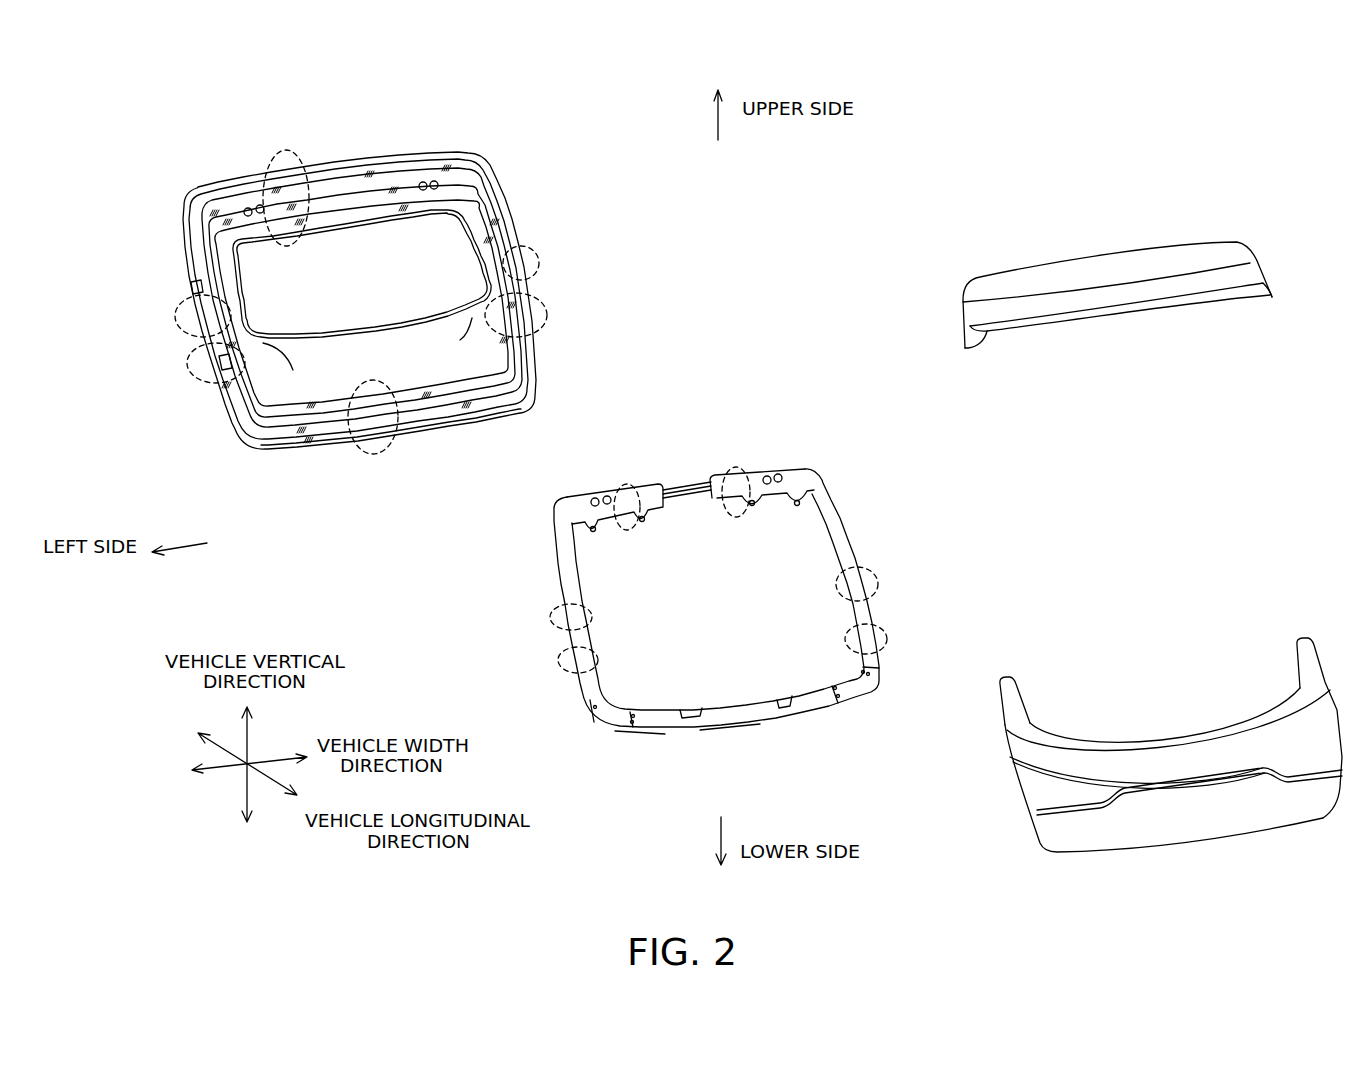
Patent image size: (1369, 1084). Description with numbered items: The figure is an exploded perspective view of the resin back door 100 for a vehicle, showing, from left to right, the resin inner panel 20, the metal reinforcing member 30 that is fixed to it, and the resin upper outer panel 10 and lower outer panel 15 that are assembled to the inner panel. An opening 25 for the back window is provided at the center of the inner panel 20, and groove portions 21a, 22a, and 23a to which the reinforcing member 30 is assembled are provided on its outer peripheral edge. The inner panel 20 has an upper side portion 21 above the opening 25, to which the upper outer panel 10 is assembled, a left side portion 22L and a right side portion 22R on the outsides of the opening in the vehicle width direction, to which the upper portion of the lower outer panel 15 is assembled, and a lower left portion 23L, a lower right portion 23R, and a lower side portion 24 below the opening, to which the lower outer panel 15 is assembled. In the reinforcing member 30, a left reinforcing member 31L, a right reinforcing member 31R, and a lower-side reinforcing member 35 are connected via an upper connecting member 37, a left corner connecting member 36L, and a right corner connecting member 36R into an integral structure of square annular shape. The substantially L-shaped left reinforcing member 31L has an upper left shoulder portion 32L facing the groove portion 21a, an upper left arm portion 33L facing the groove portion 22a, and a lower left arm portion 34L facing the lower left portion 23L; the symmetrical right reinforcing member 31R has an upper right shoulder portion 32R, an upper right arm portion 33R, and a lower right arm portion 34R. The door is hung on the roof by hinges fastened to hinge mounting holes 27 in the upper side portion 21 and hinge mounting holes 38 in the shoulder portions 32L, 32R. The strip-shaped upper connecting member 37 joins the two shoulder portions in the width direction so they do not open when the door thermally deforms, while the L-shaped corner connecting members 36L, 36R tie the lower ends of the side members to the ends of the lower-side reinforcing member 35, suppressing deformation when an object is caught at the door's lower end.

The resin back door 100 is at (946, 118).
The upper outer panel 10 is at (1210, 247).
The lower outer panel 15 is at (1340, 688).
The inner panel 20 is at (517, 135).
The upper side portion 21 is at (284, 150).
The groove portion 21a is at (327, 202).
The left side portion 22L is at (176, 314).
The right side portion 22R is at (537, 257).
The groove portion 22a is at (190, 287).
The lower left portion 23L is at (187, 368).
The lower right portion 23R is at (547, 307).
The groove portion 23a is at (223, 363).
The lower side portion 24 is at (380, 453).
The opening 25 is at (358, 274).
The hinge mounting holes 27 is at (433, 185).
The reinforcing member 30 is at (744, 432).
The left reinforcing member 31L is at (583, 483).
The right reinforcing member 31R is at (755, 473).
The upper left shoulder portion 32L is at (637, 470).
The upper right shoulder portion 32R is at (750, 462).
The upper left arm portion 33L is at (548, 612).
The upper right arm portion 33R is at (877, 575).
The lower left arm portion 34L is at (560, 665).
The lower right arm portion 34R is at (887, 640).
The lower-side reinforcing member 35 is at (730, 733).
The left corner connecting member 36L is at (590, 720).
The right corner connecting member 36R is at (857, 697).
The upper connecting member 37 is at (687, 483).
The hinge mounting holes 38 is at (783, 480).